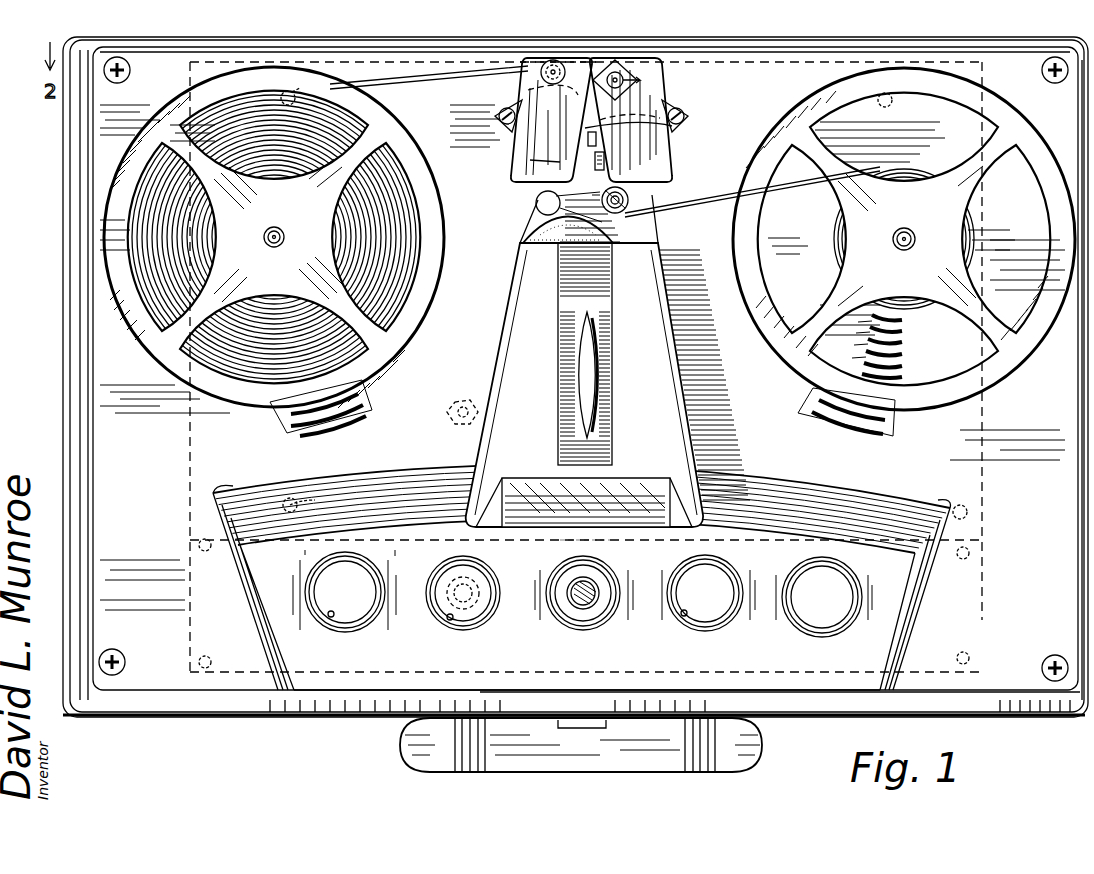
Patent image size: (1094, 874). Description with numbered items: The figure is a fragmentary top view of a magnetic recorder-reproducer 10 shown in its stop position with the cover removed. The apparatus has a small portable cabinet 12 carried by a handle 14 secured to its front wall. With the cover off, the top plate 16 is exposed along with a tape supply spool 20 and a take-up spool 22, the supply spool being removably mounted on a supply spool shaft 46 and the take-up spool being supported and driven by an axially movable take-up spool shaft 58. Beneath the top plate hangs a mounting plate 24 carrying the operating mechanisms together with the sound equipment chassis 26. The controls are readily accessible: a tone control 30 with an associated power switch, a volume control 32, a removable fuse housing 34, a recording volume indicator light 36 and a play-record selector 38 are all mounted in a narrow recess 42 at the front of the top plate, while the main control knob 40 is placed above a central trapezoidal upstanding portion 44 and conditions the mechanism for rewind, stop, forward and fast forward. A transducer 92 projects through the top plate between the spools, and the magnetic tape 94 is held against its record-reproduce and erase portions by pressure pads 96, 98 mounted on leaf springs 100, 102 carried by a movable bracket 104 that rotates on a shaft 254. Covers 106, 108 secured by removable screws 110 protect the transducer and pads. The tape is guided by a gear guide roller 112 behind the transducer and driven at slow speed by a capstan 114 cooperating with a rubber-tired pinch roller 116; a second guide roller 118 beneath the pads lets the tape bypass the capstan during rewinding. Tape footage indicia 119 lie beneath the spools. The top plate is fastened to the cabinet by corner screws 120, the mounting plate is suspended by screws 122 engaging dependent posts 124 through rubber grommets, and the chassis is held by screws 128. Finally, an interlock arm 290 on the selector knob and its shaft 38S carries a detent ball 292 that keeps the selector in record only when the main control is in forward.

The magnetic recorder-reproducer 10 is at (1062, 717).
The portable cabinet 12 is at (1005, 716).
The handle 14 is at (410, 748).
The top plate 16 is at (585, 368).
The tape supply spool 20 is at (140, 322).
The take-up spool 22 is at (1023, 328).
The mounting plate 24 is at (190, 415).
The sound equipment chassis 26 is at (190, 580).
The tone control 30 is at (727, 582).
The volume control 32 is at (325, 580).
The removable fuse housing 34 is at (845, 612).
The recording volume indicator light 36 is at (595, 582).
The play-record selector 38 is at (490, 575).
The selector shaft 38S is at (447, 620).
The main control knob 40 is at (596, 420).
The narrow recess 42 is at (585, 607).
The central trapezoidal upstanding portion 44 is at (665, 384).
The supply spool shaft 46 is at (284, 235).
The take-up spool shaft 58 is at (915, 235).
The transducer 92 is at (510, 140).
The magnetic tape 94 is at (455, 72).
The pressure pad 96 is at (598, 138).
The pressure pad 98 is at (672, 172).
The leaf spring 100 is at (672, 126).
The leaf spring 102 is at (606, 152).
The movable bracket 104 is at (640, 62).
The cover 106 is at (528, 168).
The cover 108 is at (630, 192).
The removable screws 110 is at (498, 117).
The gear guide roller 112 is at (530, 62).
The capstan 114 is at (535, 208).
The pinch roller 116 is at (525, 240).
The second guide roller 118 is at (648, 228).
The tape footage indicia 119 is at (373, 410).
The removable screws 120 is at (110, 82).
The screws 122 is at (292, 92).
The dependent posts 124 is at (285, 92).
The removable screws 128 is at (205, 551).
The shaft 254 is at (645, 82).
The interlock arm 290 is at (520, 540).
The detent ball 292 is at (448, 415).